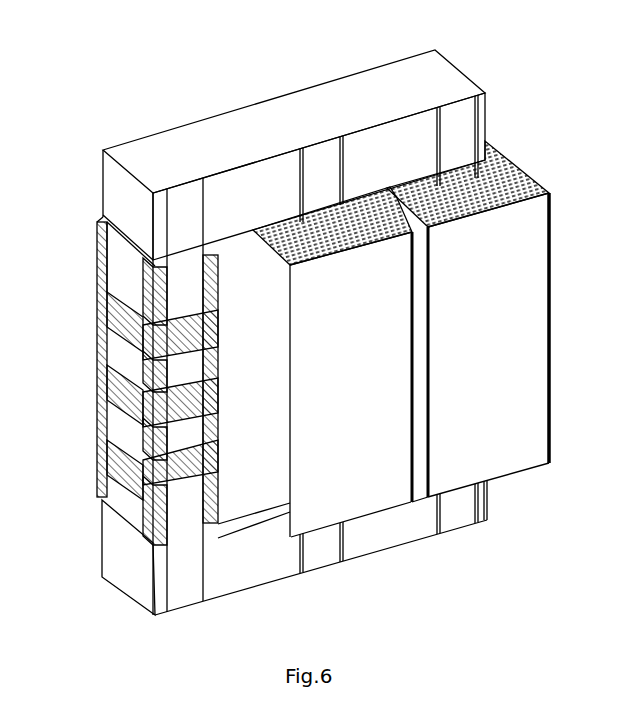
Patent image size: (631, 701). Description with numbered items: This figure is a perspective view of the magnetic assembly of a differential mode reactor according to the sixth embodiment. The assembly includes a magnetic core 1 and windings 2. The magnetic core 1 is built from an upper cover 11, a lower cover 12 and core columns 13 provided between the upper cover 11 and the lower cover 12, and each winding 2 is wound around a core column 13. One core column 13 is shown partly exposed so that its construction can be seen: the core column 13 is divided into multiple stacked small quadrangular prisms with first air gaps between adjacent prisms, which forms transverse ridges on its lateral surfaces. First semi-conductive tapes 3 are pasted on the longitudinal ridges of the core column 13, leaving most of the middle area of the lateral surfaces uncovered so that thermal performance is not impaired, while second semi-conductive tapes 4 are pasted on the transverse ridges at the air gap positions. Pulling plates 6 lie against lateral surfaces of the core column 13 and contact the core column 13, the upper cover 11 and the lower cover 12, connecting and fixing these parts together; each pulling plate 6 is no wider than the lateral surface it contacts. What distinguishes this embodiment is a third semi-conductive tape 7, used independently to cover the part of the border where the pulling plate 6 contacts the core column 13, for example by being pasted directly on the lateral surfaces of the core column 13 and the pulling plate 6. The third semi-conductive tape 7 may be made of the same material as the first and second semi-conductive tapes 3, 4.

The magnetic core 1 is at (172, 98).
The winding 2 is at (523, 342).
The first semi-conductive tape 3 is at (218, 268).
The second semi-conductive tape 4 is at (218, 325).
The pulling plate 6 is at (450, 512).
The third semi-conductive tape 7 is at (200, 272).
The upper cover 11 is at (362, 88).
The lower cover 12 is at (390, 538).
The core column 13 is at (93, 245).